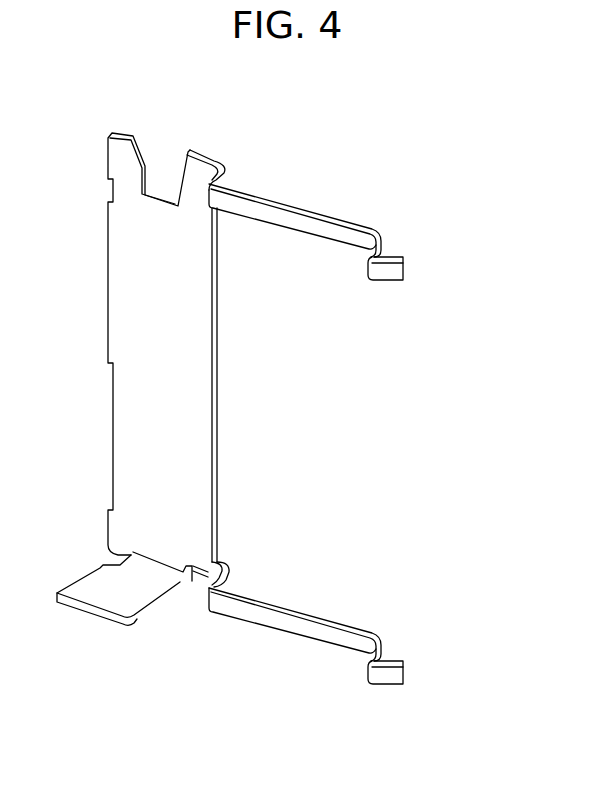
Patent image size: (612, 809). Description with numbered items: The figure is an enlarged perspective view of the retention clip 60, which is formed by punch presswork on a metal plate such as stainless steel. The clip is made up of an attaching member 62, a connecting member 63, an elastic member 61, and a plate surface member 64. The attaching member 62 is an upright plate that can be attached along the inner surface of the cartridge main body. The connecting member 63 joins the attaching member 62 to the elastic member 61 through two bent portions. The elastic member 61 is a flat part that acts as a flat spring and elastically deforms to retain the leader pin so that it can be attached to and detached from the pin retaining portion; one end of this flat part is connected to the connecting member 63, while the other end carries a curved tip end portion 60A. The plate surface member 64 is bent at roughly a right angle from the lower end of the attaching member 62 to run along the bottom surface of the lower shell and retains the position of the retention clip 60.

The retention clip 60 is at (381, 129).
The tip end portion 60A is at (380, 283).
The elastic member 61 is at (312, 226).
The attaching member 62 is at (140, 300).
The connecting member 63 is at (213, 172).
The plate surface member 64 is at (110, 595).